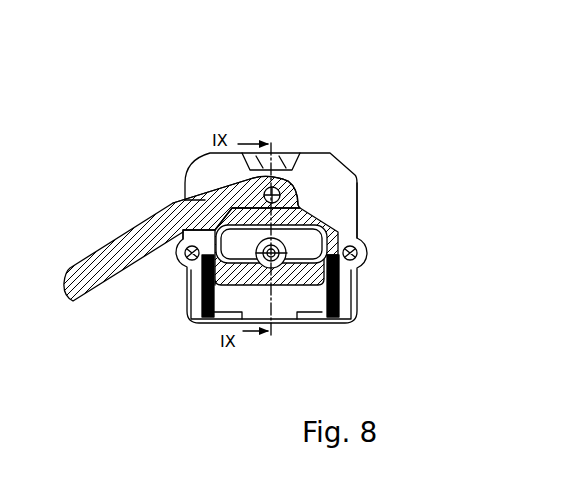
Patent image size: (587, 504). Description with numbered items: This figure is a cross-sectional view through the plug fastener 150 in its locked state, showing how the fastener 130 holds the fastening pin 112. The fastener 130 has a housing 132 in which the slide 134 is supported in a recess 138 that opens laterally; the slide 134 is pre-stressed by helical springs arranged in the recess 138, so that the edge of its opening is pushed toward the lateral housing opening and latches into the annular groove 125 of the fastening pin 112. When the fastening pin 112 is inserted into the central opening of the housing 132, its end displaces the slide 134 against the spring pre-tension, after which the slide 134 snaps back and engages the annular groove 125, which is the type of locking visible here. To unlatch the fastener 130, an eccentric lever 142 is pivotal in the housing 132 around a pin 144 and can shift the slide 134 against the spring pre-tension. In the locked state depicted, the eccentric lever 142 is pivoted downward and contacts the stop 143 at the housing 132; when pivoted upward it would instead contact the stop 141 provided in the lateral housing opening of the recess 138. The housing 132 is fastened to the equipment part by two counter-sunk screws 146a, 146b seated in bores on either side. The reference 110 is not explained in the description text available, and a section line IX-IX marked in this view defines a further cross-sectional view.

The plug fastener 150 is at (242, 197).
The stop 141 is at (277, 178).
The pin 144 is at (301, 181).
The recess 138 is at (334, 190).
The housing 132 is at (358, 190).
The slot 110 is at (288, 243).
The counter-sunk screw 146b is at (363, 244).
The counter-sunk screw 146a is at (185, 262).
The fastener 130 is at (369, 288).
The eccentric lever 142 is at (112, 246).
The stop 143 is at (178, 233).
The slide 134 is at (214, 318).
The fastening pin 112 is at (276, 267).
The annular groove 125 is at (269, 270).